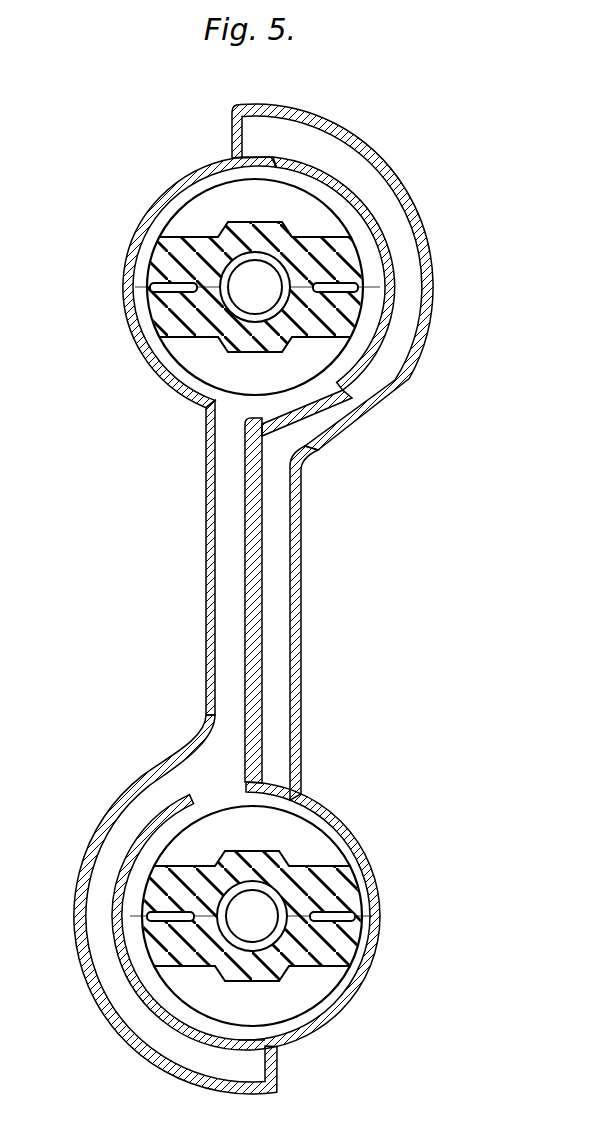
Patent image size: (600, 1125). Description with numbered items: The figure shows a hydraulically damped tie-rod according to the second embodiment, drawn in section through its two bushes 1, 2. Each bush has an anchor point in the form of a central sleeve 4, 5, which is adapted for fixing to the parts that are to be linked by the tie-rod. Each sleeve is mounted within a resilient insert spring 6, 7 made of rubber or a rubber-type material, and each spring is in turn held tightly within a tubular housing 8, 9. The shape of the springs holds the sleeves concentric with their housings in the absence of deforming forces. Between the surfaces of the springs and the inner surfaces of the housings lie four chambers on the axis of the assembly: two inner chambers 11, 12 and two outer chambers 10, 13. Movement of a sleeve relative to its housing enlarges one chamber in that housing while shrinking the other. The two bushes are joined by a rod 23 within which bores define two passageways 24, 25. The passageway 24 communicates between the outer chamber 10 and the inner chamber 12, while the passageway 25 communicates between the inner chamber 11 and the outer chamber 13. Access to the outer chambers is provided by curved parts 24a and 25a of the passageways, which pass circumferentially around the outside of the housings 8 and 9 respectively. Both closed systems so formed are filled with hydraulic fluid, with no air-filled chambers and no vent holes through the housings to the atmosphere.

The bush 1 is at (462, 283).
The bush 2 is at (400, 923).
The central sleeve 4 is at (228, 293).
The central sleeve 5 is at (280, 898).
The resilient insert spring 6 is at (162, 263).
The resilient insert spring 7 is at (341, 947).
The tubular housing 8 is at (150, 358).
The tubular housing 9 is at (328, 812).
The outer chamber 10 is at (266, 205).
The inner chamber 11 is at (266, 379).
The inner chamber 12 is at (263, 833).
The outer chamber 13 is at (263, 1007).
The rod 23 is at (312, 578).
The passageway 24 is at (284, 653).
The curved part of passageway 24a is at (400, 338).
The passageway 25 is at (214, 654).
The curved part of passageway 25a is at (157, 787).